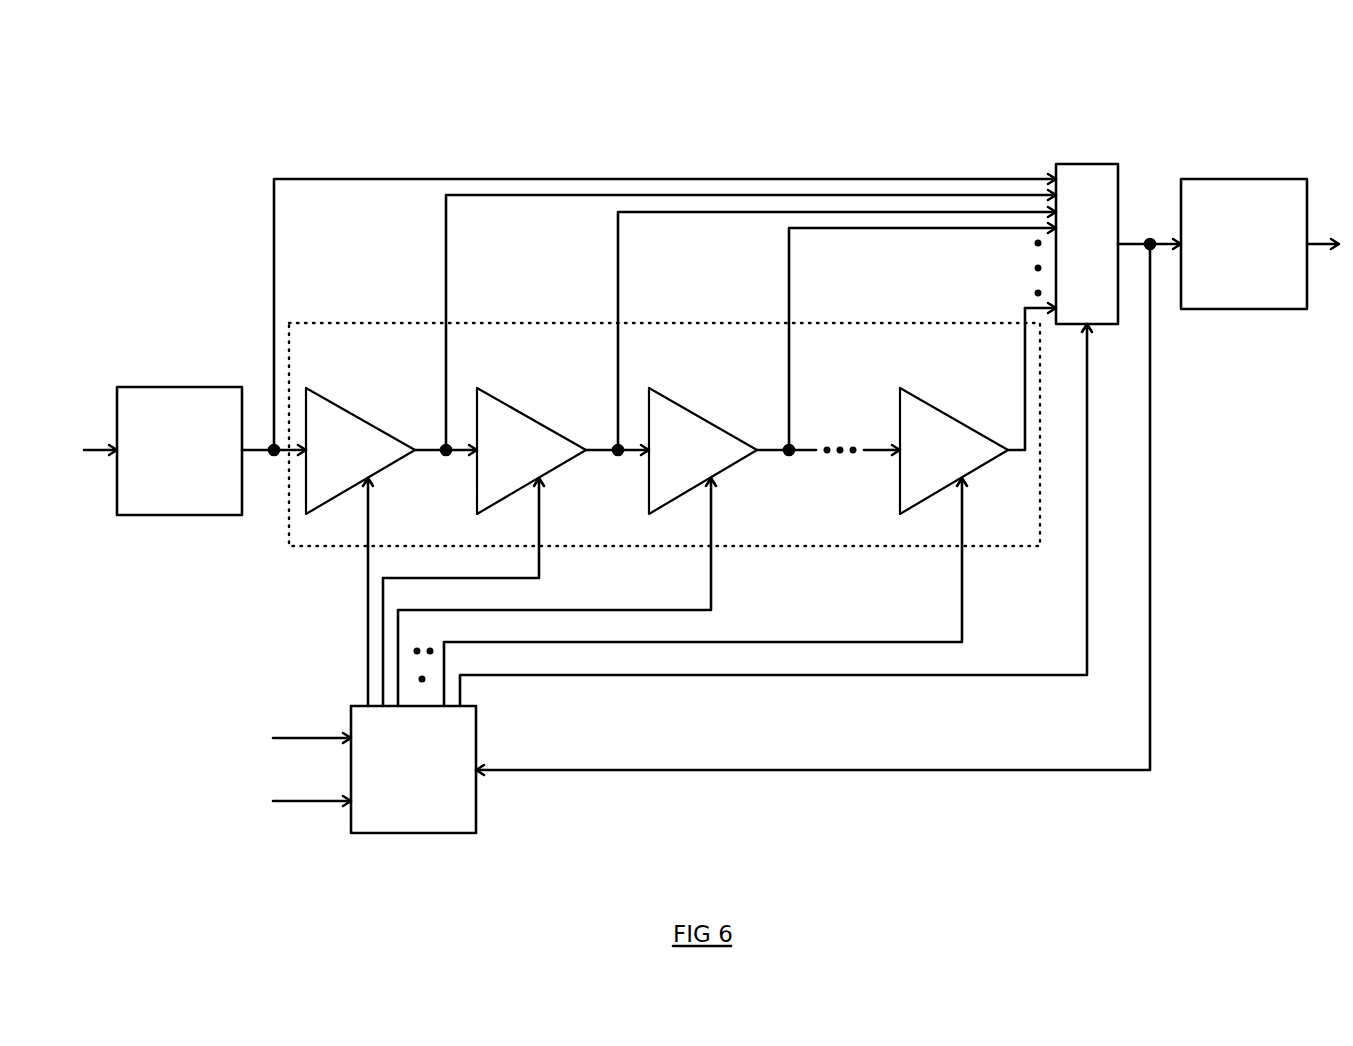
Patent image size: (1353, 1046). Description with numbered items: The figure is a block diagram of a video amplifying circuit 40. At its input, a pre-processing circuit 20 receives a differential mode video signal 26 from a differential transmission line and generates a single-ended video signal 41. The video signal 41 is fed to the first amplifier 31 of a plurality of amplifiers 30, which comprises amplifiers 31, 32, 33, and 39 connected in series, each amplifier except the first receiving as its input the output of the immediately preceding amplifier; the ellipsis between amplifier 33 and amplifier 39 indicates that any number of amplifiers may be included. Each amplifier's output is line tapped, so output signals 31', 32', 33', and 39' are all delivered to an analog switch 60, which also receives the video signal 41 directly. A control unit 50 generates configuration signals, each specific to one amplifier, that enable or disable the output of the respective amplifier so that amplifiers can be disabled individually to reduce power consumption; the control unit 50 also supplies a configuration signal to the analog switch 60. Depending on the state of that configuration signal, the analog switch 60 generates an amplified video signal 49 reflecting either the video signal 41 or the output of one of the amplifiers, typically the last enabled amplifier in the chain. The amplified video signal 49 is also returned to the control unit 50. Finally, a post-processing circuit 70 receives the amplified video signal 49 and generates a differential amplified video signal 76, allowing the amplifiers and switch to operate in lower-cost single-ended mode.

The pre-processing circuit 20 is at (153, 387).
The differential mode video signal 26 is at (98, 423).
The plurality of amplifiers 30 is at (336, 323).
The first amplifier 31 is at (360, 430).
The second amplifier 32 is at (531, 430).
The third amplifier 33 is at (703, 437).
The last amplifier 39 is at (954, 434).
The output signal of amplifier 31 31' is at (718, 320).
The output signal of amplifier 32 32' is at (804, 328).
The output signal of amplifier 33 33' is at (886, 336).
The output signal of amplifier 39 39' is at (1015, 285).
The video amplifying circuit 40 is at (697, 108).
The video signal 41 is at (273, 186).
The amplified video signal 49 is at (1150, 642).
The control unit 50 is at (388, 835).
The analog switch 60 is at (1087, 164).
The post-processing circuit 70 is at (1246, 179).
The differential amplified video signal 76 is at (1330, 240).